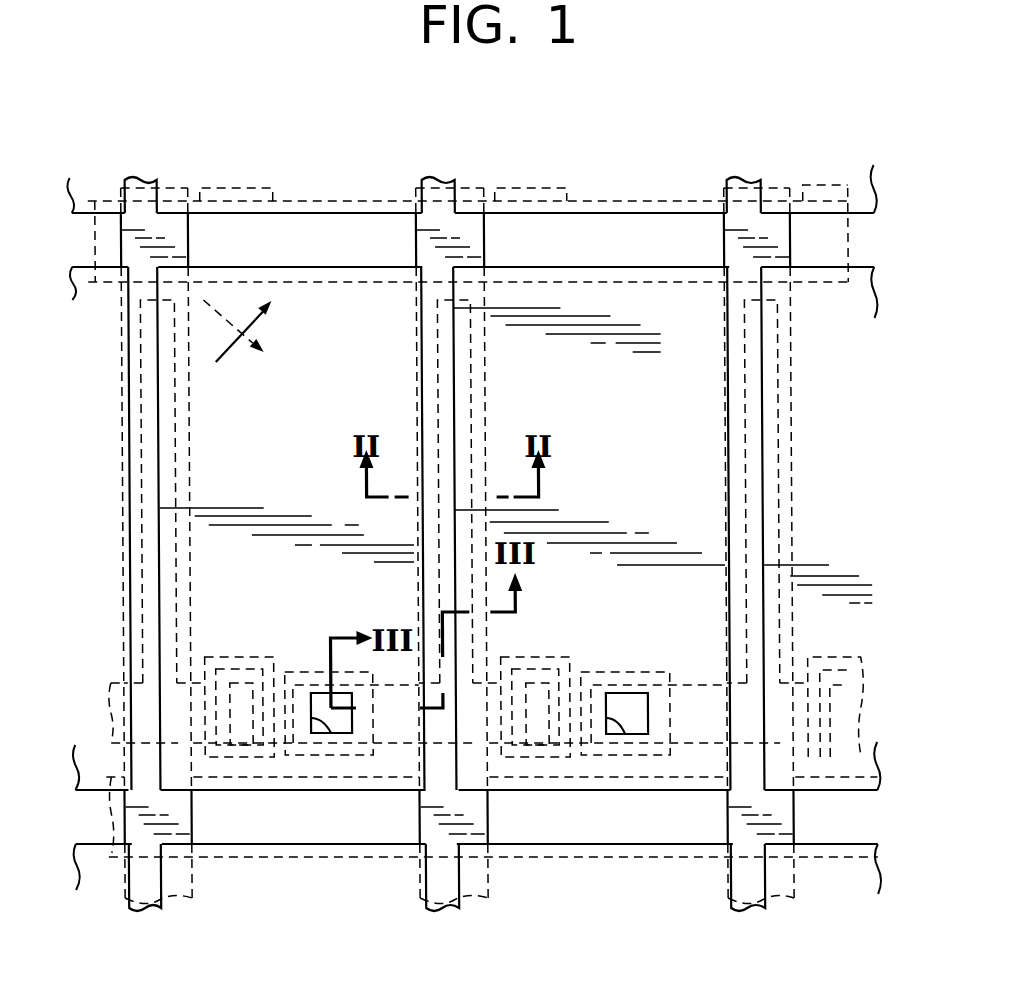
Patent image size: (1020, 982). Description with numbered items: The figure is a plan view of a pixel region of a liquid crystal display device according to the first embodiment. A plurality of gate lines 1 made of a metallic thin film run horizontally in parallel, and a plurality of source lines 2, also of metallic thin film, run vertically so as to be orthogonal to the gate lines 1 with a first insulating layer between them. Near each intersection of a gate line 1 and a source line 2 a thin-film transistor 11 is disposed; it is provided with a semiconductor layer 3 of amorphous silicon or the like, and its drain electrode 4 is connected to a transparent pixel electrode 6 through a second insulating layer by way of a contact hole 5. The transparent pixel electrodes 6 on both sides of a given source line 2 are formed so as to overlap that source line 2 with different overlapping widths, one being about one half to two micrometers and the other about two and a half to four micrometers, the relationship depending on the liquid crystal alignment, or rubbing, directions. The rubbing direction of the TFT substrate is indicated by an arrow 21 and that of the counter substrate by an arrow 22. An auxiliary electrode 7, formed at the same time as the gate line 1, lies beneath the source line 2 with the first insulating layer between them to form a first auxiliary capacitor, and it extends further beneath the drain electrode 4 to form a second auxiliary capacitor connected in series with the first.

The gate line 1 is at (383, 233).
The source line 2 is at (173, 240).
The semiconductor layer 3 is at (233, 753).
The drain electrode 4 is at (355, 755).
The contact hole 5 is at (328, 733).
The transparent pixel electrode 6 is at (343, 312).
The auxiliary electrode 7 is at (145, 482).
The thin-film transistor 11 is at (235, 680).
The arrow 21 is at (247, 334).
The arrow 22 is at (215, 364).